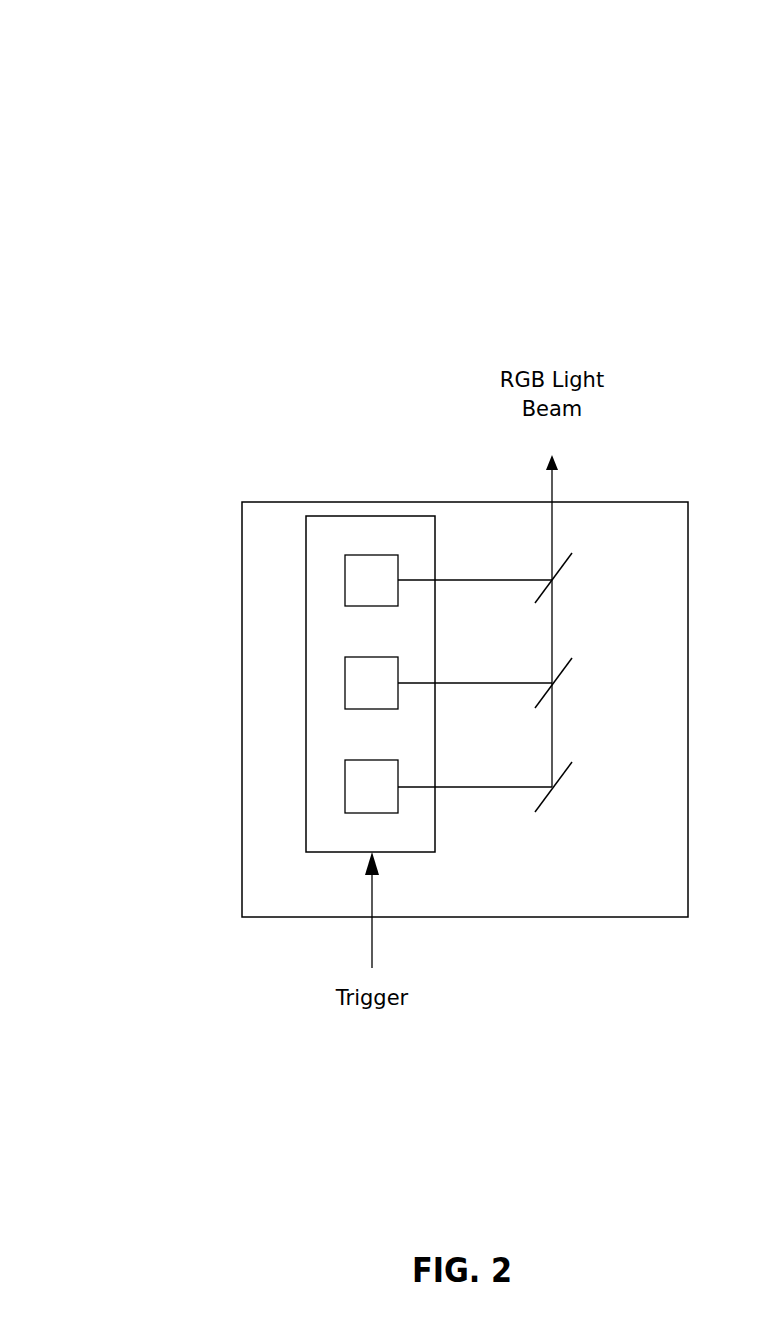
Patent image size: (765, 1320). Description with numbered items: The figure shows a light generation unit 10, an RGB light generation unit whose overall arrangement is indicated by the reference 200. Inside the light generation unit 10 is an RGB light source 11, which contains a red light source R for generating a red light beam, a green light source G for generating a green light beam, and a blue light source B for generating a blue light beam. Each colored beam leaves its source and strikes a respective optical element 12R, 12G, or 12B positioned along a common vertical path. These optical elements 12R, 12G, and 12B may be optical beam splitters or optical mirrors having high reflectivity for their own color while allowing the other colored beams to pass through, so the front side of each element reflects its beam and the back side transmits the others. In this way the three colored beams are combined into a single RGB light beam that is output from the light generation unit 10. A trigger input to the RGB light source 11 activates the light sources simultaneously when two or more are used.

The laser projection system 200 is at (156, 61).
The light generation unit 10 is at (580, 917).
The RGB light source 11 is at (372, 516).
The optical element 12R is at (556, 580).
The optical element 12G is at (556, 683).
The optical element 12B is at (556, 787).